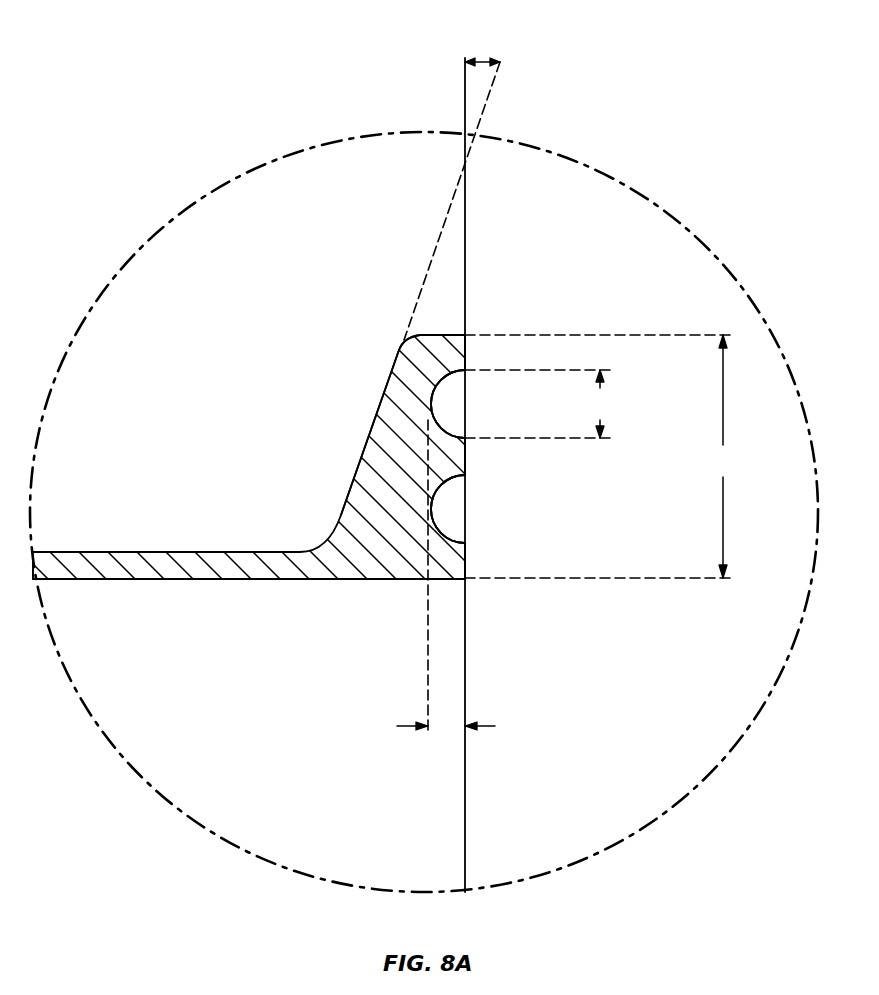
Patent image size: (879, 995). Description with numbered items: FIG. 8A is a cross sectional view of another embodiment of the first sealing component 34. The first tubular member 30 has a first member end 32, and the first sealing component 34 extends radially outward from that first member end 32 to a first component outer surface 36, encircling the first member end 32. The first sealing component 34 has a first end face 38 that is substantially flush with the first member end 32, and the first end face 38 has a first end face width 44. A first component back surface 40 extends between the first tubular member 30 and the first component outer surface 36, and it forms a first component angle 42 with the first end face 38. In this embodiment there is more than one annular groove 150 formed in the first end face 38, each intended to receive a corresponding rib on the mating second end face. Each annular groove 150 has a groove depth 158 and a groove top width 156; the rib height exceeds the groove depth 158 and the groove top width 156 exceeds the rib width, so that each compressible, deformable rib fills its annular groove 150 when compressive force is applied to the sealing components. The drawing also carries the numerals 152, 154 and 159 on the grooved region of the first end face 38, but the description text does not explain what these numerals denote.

The first tubular member 30 is at (155, 565).
The first member end 32 is at (466, 554).
The first sealing component 34 is at (363, 503).
The first component outer surface 36 is at (430, 335).
The first end face 38 is at (462, 362).
The first component back surface 40 is at (367, 428).
The first component angle 42 is at (485, 58).
The first end face width 44 is at (722, 456).
The annular groove 150 is at (440, 420).
The lower groove 152 is at (441, 500).
The land 154 is at (465, 478).
The groove top width 156 is at (602, 404).
The groove depth 158 is at (410, 724).
The upper groove 159 is at (442, 395).